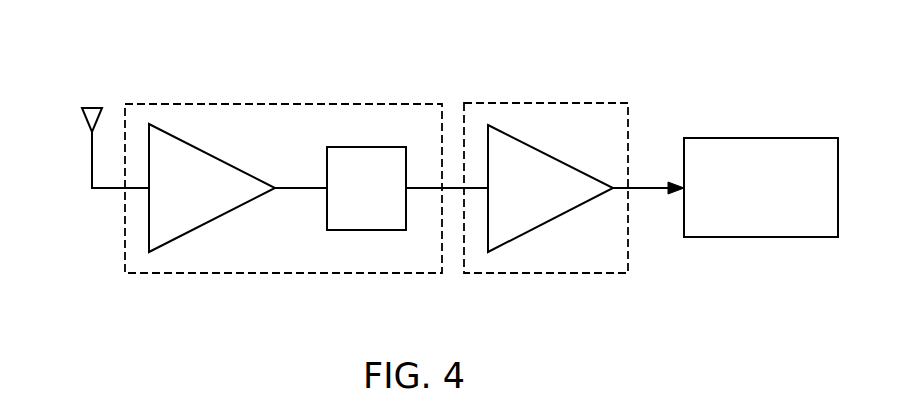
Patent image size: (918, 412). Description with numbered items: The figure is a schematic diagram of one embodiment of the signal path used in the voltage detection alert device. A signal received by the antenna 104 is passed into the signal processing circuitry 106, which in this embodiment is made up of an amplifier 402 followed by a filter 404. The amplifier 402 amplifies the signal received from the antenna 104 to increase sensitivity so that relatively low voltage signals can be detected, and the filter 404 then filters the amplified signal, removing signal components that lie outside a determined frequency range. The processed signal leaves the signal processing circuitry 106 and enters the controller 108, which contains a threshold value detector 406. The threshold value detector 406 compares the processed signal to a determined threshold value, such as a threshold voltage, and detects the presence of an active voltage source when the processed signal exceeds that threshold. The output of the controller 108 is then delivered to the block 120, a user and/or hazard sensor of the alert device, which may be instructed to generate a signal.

The antenna 104 is at (92, 108).
The signal processing circuitry 106 is at (279, 104).
The controller 108 is at (548, 103).
The sensor 120 is at (758, 138).
The amplifier 402 is at (213, 222).
The filter 404 is at (367, 230).
The threshold value detector 406 is at (550, 222).